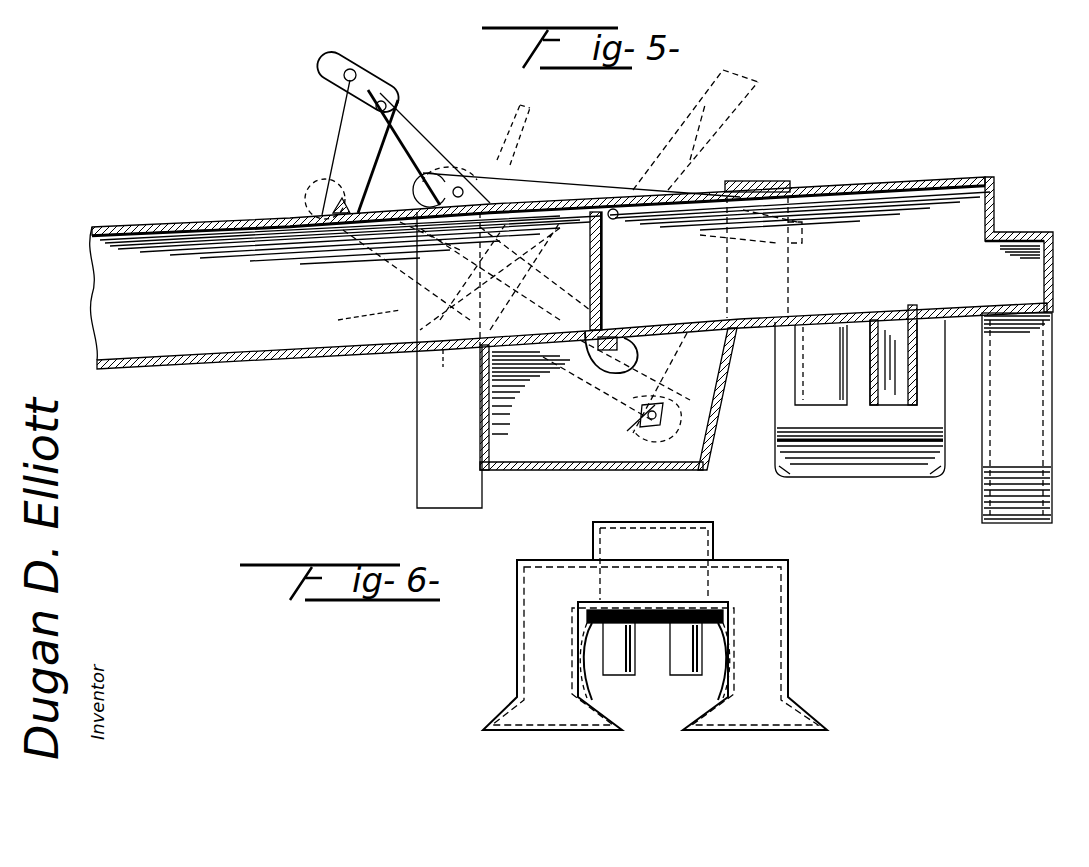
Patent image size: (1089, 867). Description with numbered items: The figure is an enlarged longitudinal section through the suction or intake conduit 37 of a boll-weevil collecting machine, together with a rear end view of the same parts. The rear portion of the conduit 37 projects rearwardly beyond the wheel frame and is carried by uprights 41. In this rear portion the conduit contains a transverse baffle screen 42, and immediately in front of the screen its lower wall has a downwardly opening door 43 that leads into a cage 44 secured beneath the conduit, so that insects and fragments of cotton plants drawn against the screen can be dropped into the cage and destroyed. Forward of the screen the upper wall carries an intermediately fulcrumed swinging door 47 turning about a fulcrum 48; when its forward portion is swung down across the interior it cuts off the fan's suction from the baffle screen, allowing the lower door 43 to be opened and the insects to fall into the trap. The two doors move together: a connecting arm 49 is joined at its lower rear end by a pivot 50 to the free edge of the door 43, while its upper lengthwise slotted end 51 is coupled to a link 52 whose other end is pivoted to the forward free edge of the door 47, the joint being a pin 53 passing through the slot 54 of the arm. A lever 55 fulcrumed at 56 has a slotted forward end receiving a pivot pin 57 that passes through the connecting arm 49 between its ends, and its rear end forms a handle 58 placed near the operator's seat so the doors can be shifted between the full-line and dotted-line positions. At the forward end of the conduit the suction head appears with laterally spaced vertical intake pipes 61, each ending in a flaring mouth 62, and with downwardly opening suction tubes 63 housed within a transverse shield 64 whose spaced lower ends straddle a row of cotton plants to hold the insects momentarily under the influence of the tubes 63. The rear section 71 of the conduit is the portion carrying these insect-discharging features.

In FIG. 5, the suction conduit 37 is at (255, 337).
In FIG. 5, the uprights 41 is at (432, 469).
In FIG. 5, the baffle screen 42 is at (605, 280).
In FIG. 5, the door 43 is at (700, 318).
In FIG. 5, the cage 44 is at (687, 448).
In FIG. 5, the swinging door 47 is at (530, 203).
In FIG. 5, the fulcrum 48 is at (473, 217).
In FIG. 5, the connecting arm 49 is at (420, 205).
In FIG. 5, the pivot 50 is at (633, 352).
In FIG. 5, the slotted end 51 is at (365, 80).
In FIG. 5, the link 52 is at (350, 155).
In FIG. 5, the pin 53 is at (385, 110).
In FIG. 5, the slot 54 is at (353, 97).
In FIG. 5, the lever 55 is at (568, 193).
In FIG. 5, the fulcrum 56 is at (613, 222).
In FIG. 5, the pivot pin 57 is at (470, 163).
In FIG. 5, the handle 58 is at (722, 120).
In FIG. 5, the intake pipes 61 is at (1033, 435).
In FIG. 6, the intake pipes 61 is at (541, 655).
In FIG. 5, the flaring mouth 62 is at (1020, 524).
In FIG. 6, the flaring mouth 62 is at (565, 733).
In FIG. 5, the suction tubes 63 is at (826, 388).
In FIG. 6, the suction tubes 63 is at (690, 665).
In FIG. 5, the shield 64 is at (872, 466).
In FIG. 6, the shield 64 is at (664, 622).
In FIG. 6, the rear section 71 is at (720, 535).